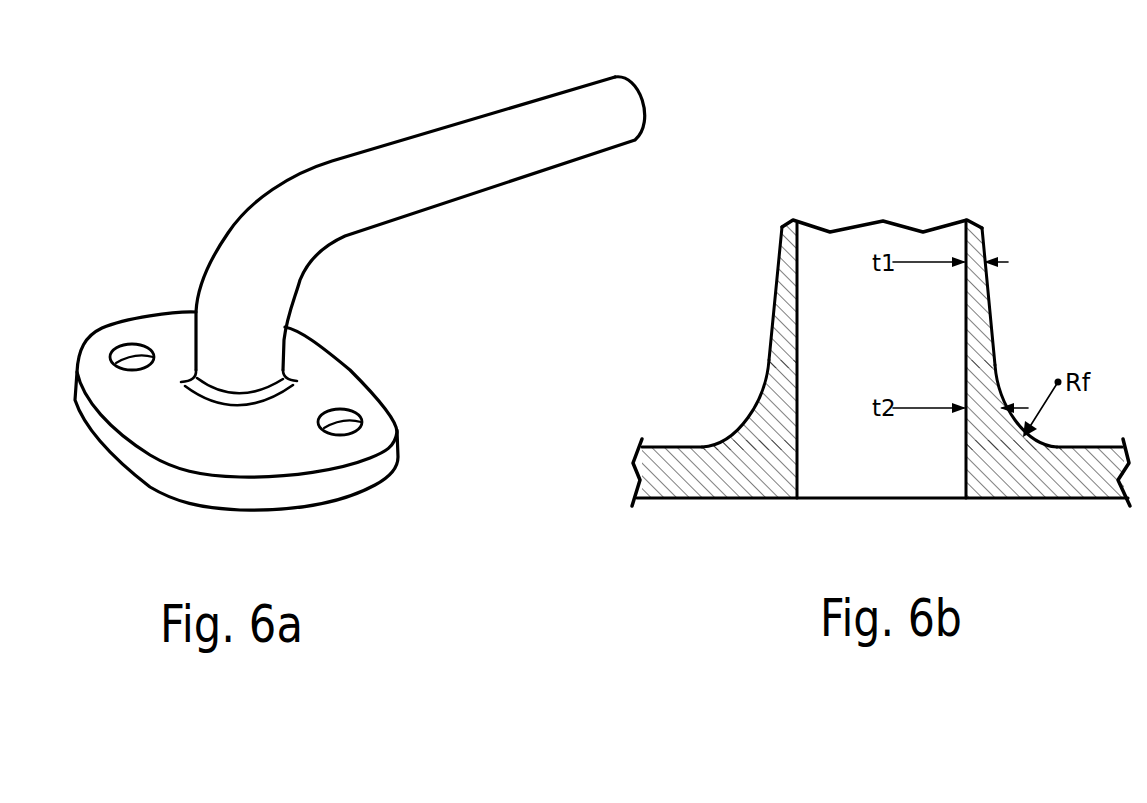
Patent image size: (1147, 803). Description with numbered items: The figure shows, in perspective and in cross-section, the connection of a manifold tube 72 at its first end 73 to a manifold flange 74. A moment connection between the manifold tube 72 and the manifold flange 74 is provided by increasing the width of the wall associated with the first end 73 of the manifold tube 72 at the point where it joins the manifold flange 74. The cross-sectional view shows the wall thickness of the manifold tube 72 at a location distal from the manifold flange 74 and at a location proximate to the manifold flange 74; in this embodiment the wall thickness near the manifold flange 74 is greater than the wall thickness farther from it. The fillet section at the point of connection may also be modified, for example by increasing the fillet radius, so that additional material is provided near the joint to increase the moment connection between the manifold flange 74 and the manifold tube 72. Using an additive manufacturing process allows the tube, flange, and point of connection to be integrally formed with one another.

In FIG. 6A, the manifold tube 72 is at (454, 148).
In FIG. 6B, the manifold tube 72 is at (778, 256).
In FIG. 6A, the first end 73 is at (267, 300).
In FIG. 6B, the first end 73 is at (768, 373).
In FIG. 6A, the manifold flange 74 is at (365, 493).
In FIG. 6B, the manifold flange 74 is at (697, 500).